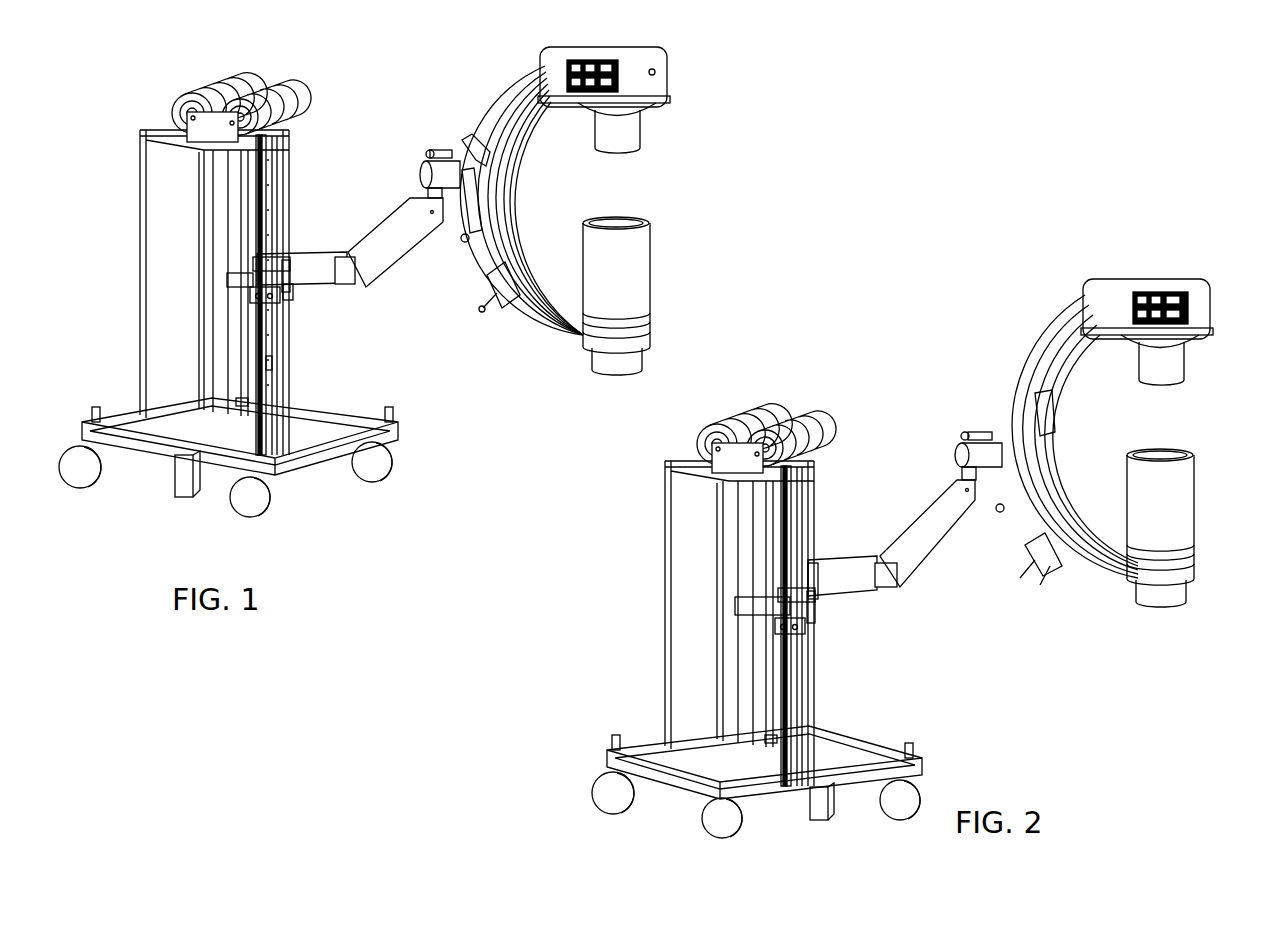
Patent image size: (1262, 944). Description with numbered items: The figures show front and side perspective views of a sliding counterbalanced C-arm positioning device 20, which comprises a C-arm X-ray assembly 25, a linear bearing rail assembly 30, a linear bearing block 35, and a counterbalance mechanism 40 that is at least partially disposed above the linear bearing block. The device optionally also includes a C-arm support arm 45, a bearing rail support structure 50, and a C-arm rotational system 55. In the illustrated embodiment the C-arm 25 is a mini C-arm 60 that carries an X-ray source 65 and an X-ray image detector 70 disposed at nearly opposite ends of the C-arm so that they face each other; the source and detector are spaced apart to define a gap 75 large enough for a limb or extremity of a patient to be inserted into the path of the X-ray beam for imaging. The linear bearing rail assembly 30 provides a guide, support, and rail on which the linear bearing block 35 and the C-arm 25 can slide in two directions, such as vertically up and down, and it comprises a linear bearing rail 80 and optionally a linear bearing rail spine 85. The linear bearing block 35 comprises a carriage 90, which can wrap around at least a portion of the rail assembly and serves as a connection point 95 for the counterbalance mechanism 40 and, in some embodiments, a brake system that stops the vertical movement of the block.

In FIG. 1, the sliding counterbalanced C-arm positioning device 20 is at (352, 146).
In FIG. 2, the sliding counterbalanced C-arm positioning device 20 is at (870, 437).
In FIG. 1, the C-arm X-ray assembly 25 is at (547, 337).
In FIG. 2, the C-arm X-ray assembly 25 is at (1105, 583).
In FIG. 1, the linear bearing rail assembly 30 is at (278, 425).
In FIG. 2, the linear bearing rail assembly 30 is at (830, 626).
In FIG. 1, the linear bearing block 35 is at (288, 296).
In FIG. 2, the linear bearing block 35 is at (833, 551).
In FIG. 1, the counterbalance mechanism 40 is at (298, 88).
In FIG. 2, the counterbalance mechanism 40 is at (782, 423).
In FIG. 1, the C-arm support arm 45 is at (368, 293).
In FIG. 2, the C-arm support arm 45 is at (912, 585).
In FIG. 1, the bearing rail support structure 50 is at (128, 300).
In FIG. 2, the bearing rail support structure 50 is at (742, 649).
In FIG. 1, the C-arm rotational system 55 is at (456, 150).
In FIG. 2, the C-arm rotational system 55 is at (1000, 432).
In FIG. 1, the mini C-arm 60 is at (518, 216).
In FIG. 1, the X-ray source 65 is at (648, 129).
In FIG. 1, the X-ray image detector 70 is at (657, 268).
In FIG. 1, the gap 75 is at (642, 190).
In FIG. 1, the linear bearing rail 80 is at (272, 363).
In FIG. 1, the linear bearing rail spine 85 is at (243, 405).
In FIG. 2, the linear bearing rail spine 85 is at (762, 790).
In FIG. 1, the carriage 90 is at (270, 255).
In FIG. 2, the carriage 90 is at (812, 621).
In FIG. 2, the connection point 95 is at (731, 643).